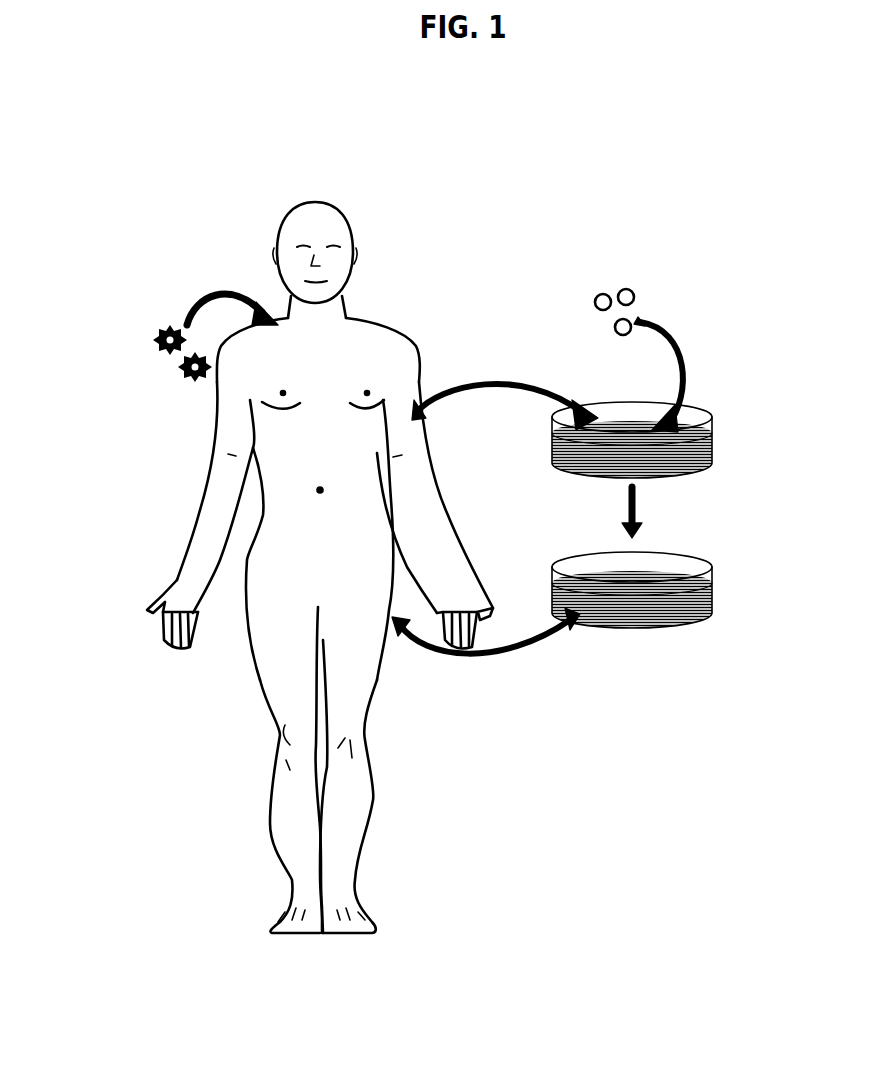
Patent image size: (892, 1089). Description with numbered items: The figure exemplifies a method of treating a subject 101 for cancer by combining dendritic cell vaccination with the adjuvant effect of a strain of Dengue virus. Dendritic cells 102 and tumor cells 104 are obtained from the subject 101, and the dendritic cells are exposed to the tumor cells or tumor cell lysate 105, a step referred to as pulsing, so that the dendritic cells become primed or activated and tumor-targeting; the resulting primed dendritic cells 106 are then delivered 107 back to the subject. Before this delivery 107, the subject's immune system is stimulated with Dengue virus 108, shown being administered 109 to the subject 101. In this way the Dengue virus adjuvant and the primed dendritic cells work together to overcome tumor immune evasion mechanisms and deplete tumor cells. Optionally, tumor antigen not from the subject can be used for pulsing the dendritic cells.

The subject 101 is at (317, 186).
The dendritic cells 102 is at (567, 320).
The tumor cells 104 is at (505, 377).
The tumor cell lysate 105 is at (667, 470).
The primed dendritic cells 106 is at (633, 651).
The delivering 107 is at (486, 659).
The Dengue virus 108 is at (134, 364).
The administration of dengue virus to patient 109 is at (225, 282).